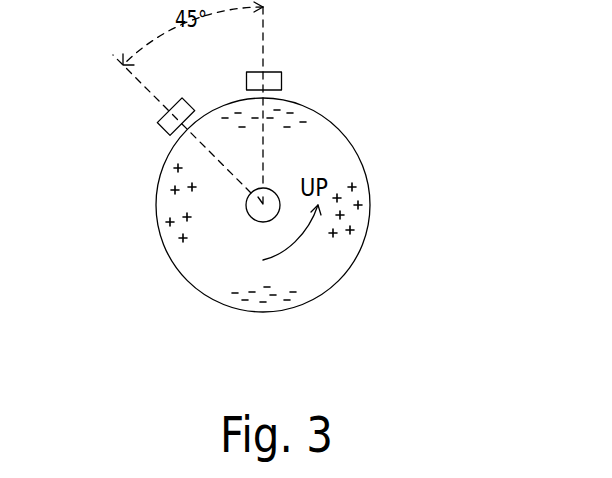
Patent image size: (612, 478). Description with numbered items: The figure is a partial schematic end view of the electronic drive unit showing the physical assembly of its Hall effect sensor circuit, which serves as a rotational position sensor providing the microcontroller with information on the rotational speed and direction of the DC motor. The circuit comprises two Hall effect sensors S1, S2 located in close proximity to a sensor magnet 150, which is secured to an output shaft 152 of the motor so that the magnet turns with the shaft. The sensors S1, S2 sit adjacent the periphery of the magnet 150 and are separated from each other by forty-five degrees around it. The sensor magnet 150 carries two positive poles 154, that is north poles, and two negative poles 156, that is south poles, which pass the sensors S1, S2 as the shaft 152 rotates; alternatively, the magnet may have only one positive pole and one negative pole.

The sensor magnet 150 is at (187, 282).
The output shaft 152 is at (272, 190).
The positive poles 154 is at (160, 252).
The negative poles 156 is at (325, 107).
The Hall effect sensor S1 is at (283, 80).
The Hall effect sensor S2 is at (171, 129).